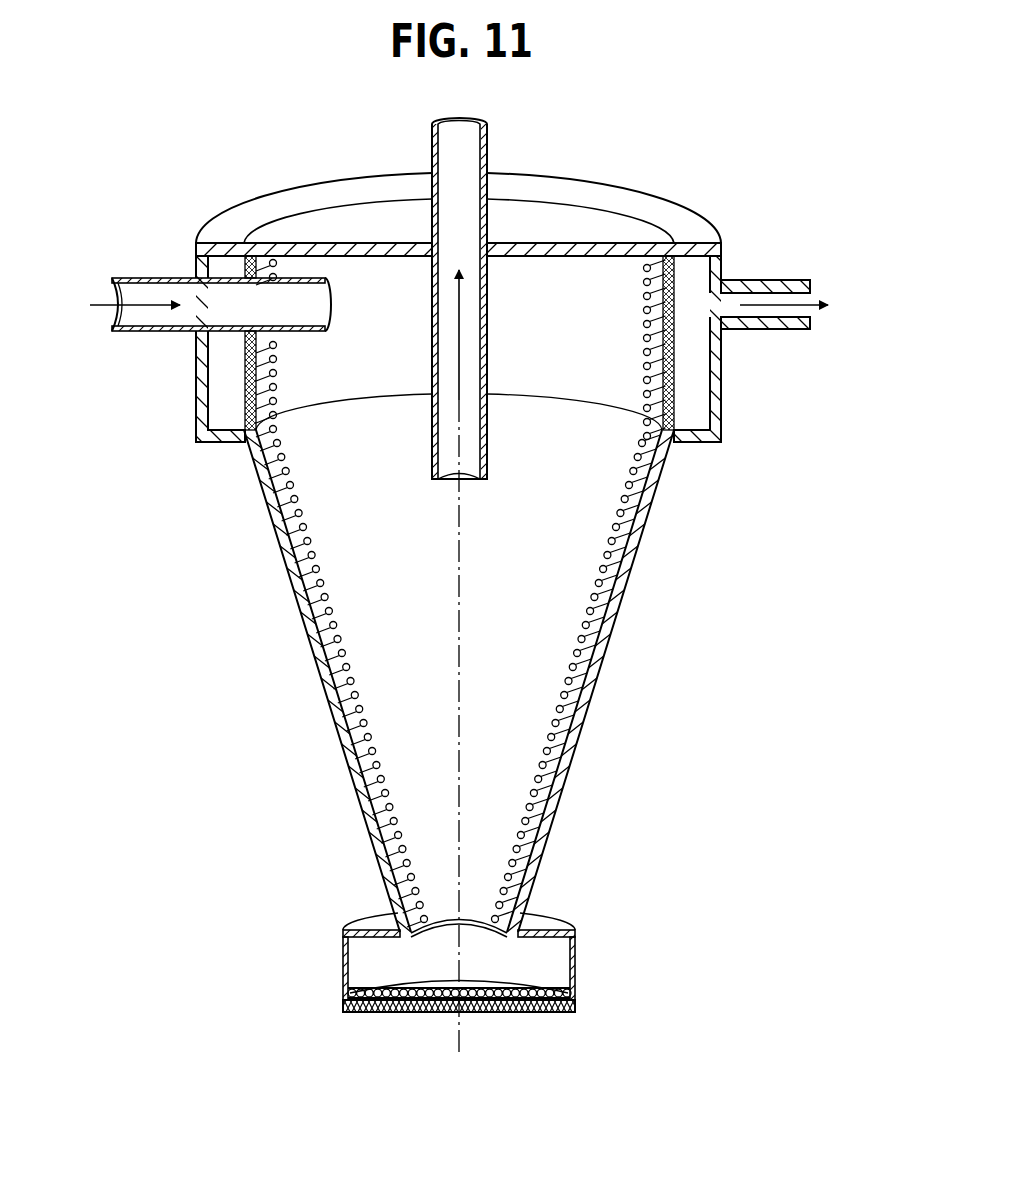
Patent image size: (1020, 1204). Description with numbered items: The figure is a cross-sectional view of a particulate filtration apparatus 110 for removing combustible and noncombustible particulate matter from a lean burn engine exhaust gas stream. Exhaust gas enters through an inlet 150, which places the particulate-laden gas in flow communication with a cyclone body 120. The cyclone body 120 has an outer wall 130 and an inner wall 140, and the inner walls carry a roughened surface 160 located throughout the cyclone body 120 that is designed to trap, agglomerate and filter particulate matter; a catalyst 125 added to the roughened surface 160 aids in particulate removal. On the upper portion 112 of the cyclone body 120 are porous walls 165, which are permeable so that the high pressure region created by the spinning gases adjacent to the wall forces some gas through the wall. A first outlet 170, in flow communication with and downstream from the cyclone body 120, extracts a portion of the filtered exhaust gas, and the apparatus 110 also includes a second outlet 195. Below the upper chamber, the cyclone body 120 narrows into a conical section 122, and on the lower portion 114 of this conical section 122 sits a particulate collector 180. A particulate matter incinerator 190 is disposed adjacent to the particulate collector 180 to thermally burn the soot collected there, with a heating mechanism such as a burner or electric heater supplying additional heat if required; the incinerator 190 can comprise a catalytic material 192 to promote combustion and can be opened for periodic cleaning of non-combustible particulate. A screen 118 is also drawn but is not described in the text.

The particulate filtration apparatus 110 is at (683, 150).
The upper portion of the cyclone body 112 is at (660, 242).
The lower portion of the conical section 114 is at (528, 922).
The inlet screen 118 is at (298, 375).
The cyclone body 120 is at (618, 370).
The conical section 122 is at (528, 741).
The catalyst 125 is at (553, 817).
The outer wall 130 is at (634, 562).
The inner wall 140 is at (598, 603).
The inlet 150 is at (142, 277).
The roughened surface 160 is at (617, 527).
The porous walls 165 is at (665, 407).
The first outlet 170 is at (475, 152).
The particulate collector 180 is at (555, 970).
The particulate matter incinerator 190 is at (575, 1003).
The catalytic material 192 is at (345, 994).
The second outlet 195 is at (797, 298).